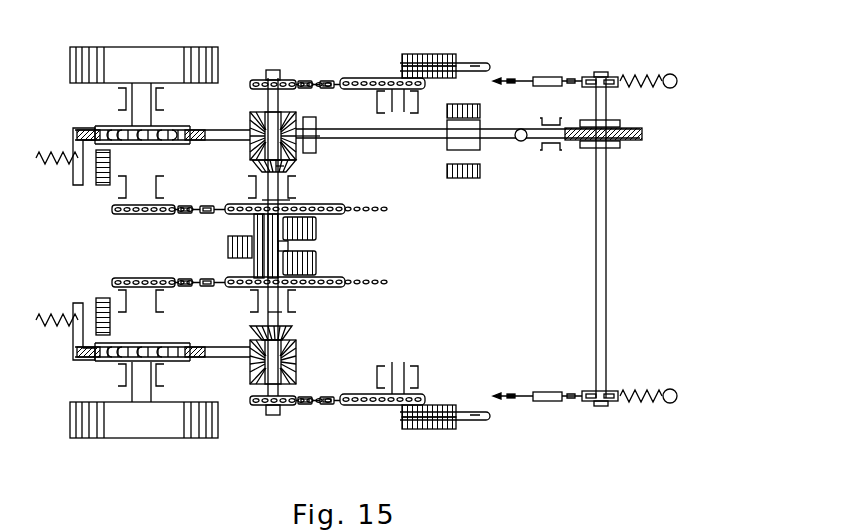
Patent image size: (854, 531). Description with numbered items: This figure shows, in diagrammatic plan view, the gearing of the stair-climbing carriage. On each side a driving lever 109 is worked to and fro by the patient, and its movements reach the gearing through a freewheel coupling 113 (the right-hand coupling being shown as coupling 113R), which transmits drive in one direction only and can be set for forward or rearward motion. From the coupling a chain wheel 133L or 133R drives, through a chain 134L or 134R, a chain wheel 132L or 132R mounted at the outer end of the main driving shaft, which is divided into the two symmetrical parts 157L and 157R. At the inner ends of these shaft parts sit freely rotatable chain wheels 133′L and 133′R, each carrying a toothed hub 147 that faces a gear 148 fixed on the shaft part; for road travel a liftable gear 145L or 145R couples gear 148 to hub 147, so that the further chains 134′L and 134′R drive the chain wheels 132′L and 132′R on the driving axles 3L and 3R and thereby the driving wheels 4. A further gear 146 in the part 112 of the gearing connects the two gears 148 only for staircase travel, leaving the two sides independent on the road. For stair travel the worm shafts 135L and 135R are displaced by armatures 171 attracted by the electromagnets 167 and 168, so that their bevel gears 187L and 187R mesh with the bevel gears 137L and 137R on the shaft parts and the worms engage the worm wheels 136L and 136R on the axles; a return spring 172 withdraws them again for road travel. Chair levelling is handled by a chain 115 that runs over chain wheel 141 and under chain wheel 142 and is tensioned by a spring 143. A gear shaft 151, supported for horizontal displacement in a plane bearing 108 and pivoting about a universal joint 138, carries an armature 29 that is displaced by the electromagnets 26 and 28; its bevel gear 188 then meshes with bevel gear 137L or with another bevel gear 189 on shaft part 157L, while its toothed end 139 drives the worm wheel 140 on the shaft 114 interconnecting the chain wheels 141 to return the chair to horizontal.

The driving axle 3L is at (140, 114).
The driving axle 3R is at (140, 366).
The driving wheel 4 is at (144, 242).
The electromagnet 26 is at (480, 110).
The electromagnet 28 is at (464, 178).
The armature 29 is at (472, 140).
The plane bearing 108 is at (316, 120).
The driving lever 109 is at (455, 62).
The part of the gearing 112 is at (396, 254).
The freewheel coupling 113 is at (394, 52).
The freewheel coupling 113R is at (392, 420).
The shaft 114 is at (598, 240).
The chain 115 is at (507, 237).
The chain wheel 132L is at (282, 78).
The chain wheel 132R is at (258, 408).
The chain wheel 132′L is at (124, 214).
The chain wheel 132′R is at (124, 278).
The chain wheel 133L is at (358, 78).
The chain wheel 133R is at (356, 394).
The chain wheel 133′L is at (236, 204).
The chain wheel 133′R is at (240, 292).
The chain 134L is at (312, 80).
The chain 134R is at (312, 390).
The chain 134′L is at (188, 198).
The chain 134′R is at (184, 288).
The worm shaft 135L is at (196, 143).
The worm shaft 135R is at (235, 336).
The worm wheel 136L is at (165, 128).
The worm wheel 136R is at (168, 360).
The bevel gear 137L is at (262, 112).
The bevel gear 137R is at (292, 332).
The universal joint 138 is at (524, 141).
The toothed end 139 is at (630, 128).
The worm wheel 140 is at (612, 147).
The chain wheel 141 is at (590, 76).
The chain wheel 142 is at (546, 76).
The spring 143 is at (642, 76).
The gear 145L is at (316, 226).
The gear 145R is at (316, 264).
The gear 146 is at (228, 246).
The toothed hub 147 is at (252, 218).
The gear 148 is at (290, 250).
The gear shaft 151 is at (412, 140).
The shaft part 157L is at (290, 201).
The shaft part 157R is at (282, 320).
The electromagnet 167 is at (100, 186).
The electromagnet 168 is at (100, 300).
The armature 171 is at (82, 152).
The return spring 172 is at (46, 168).
The bevel gear 187L is at (262, 150).
The bevel gear 187R is at (262, 372).
The bevel gear 188 is at (285, 140).
The bevel gear 189 is at (288, 165).